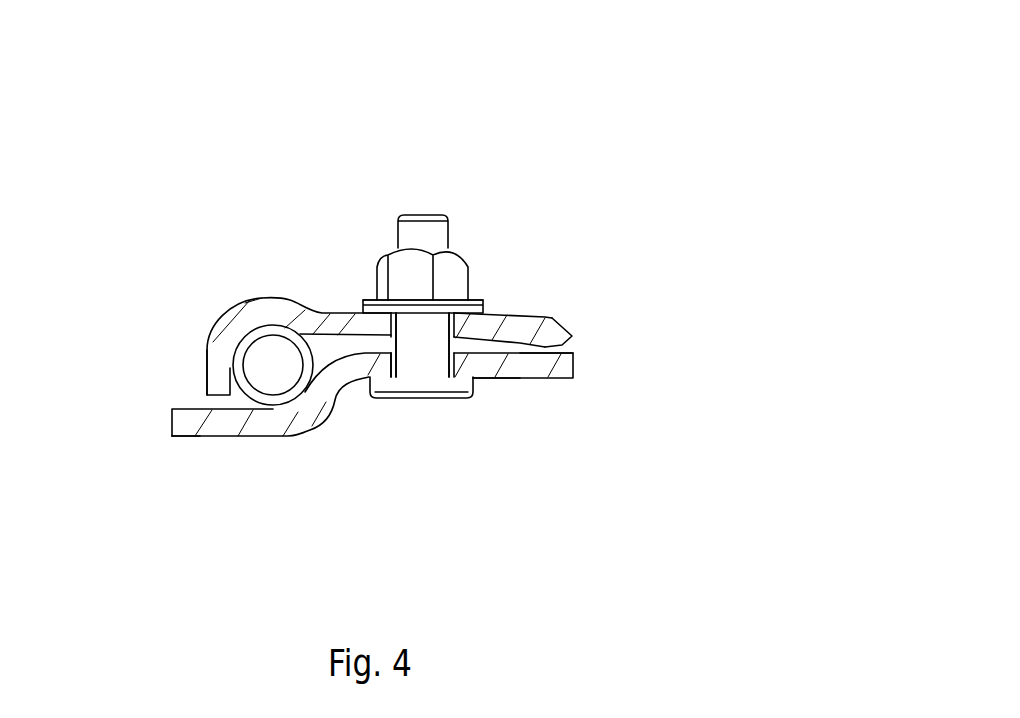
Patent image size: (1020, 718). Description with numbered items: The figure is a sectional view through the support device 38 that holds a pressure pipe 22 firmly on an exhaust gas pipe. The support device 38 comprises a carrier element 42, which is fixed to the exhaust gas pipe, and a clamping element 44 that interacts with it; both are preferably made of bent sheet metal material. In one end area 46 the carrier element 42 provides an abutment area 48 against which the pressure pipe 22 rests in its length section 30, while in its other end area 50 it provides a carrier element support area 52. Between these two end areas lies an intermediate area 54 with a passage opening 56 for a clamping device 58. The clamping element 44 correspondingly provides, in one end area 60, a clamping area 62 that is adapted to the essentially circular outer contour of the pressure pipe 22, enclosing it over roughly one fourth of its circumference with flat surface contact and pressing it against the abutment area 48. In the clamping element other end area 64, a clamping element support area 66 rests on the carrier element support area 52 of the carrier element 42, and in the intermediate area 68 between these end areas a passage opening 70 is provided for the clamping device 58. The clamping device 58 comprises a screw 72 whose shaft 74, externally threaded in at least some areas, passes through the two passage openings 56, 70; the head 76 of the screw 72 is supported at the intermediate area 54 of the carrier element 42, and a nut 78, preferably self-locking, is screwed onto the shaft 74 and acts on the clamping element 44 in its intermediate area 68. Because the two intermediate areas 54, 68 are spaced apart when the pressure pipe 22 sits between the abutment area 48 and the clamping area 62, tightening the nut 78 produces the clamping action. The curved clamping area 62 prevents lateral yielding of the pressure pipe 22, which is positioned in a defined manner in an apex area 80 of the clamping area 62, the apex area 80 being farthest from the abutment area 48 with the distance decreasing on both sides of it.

The pressure pipe 22 is at (284, 396).
The length section 30 is at (230, 374).
The support device 38 is at (653, 116).
The carrier element 42 is at (332, 413).
The clamping element 44 is at (320, 320).
The end area 46 is at (188, 438).
The abutment area 48 is at (277, 399).
The other end area 50 is at (575, 366).
The carrier element support area 52 is at (533, 362).
The intermediate area 54 is at (358, 373).
The passage opening 56 is at (478, 392).
The clamping device 58 is at (449, 430).
The end area 60 is at (242, 303).
The clamping area 62 is at (218, 352).
The clamping element other end area 64 is at (563, 323).
The clamping element support area 66 is at (527, 337).
The intermediate area 68 is at (340, 323).
The passage opening 70 is at (455, 325).
The screw 72 is at (433, 406).
The shaft 74 is at (433, 312).
The head 76 is at (460, 400).
The nut 78 is at (399, 250).
The apex area 80 is at (258, 322).